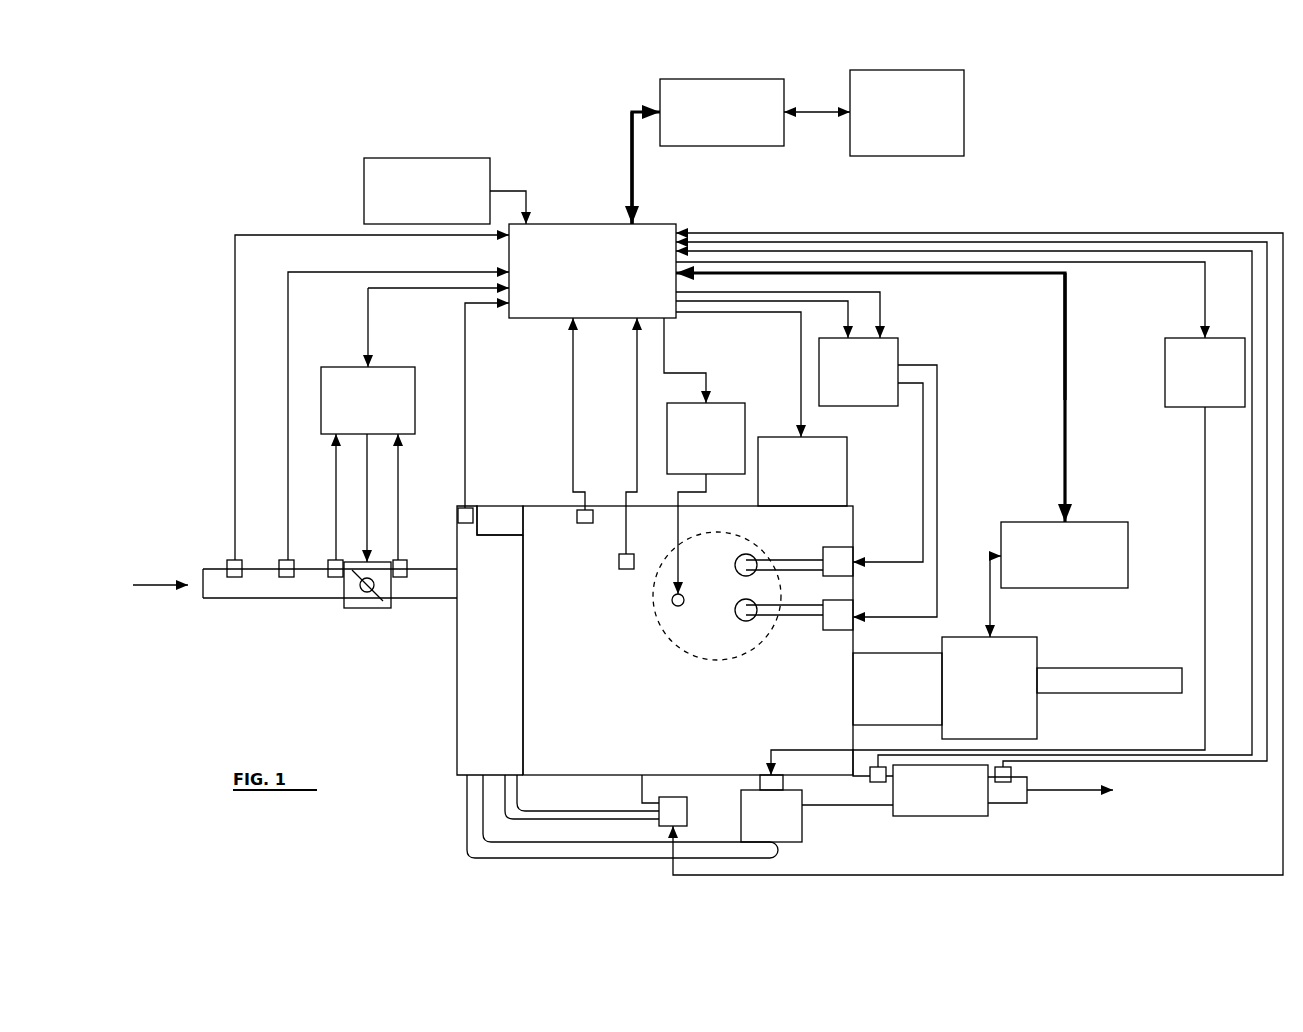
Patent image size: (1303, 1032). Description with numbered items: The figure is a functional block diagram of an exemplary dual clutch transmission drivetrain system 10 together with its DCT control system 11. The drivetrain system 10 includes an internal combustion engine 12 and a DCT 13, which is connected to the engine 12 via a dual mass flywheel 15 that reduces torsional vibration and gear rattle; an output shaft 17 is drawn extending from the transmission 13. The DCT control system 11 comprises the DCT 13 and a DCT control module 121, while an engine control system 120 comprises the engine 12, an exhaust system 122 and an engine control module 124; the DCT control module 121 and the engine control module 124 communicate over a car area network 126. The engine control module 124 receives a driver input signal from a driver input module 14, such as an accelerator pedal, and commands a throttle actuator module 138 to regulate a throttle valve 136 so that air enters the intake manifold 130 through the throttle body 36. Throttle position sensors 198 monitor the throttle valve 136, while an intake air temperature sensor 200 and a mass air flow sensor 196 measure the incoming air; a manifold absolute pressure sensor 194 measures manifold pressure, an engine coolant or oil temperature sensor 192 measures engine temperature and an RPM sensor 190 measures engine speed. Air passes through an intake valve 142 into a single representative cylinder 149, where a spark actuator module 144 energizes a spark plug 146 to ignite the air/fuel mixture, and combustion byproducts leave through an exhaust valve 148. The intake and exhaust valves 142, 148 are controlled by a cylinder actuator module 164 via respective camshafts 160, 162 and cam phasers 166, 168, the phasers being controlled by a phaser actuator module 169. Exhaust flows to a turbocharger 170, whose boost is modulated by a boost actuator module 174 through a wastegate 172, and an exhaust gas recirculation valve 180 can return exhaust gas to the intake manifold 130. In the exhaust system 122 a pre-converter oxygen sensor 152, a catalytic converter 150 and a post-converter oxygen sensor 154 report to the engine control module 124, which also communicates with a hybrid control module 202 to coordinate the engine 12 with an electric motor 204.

The dual clutch transmission drivetrain system 10 is at (182, 128).
The driver input module 14 is at (364, 190).
The engine control module 124 is at (593, 224).
The car area network 126 is at (632, 140).
The hybrid control module 202 is at (724, 146).
The electric motor 204 is at (918, 156).
The engine control system 120 is at (995, 228).
The boost actuator module 174 is at (1165, 338).
The phaser actuator module 169 is at (900, 348).
The spark actuator module 144 is at (730, 403).
The cylinder actuator module 164 is at (847, 460).
The DCT control system 11 is at (1120, 490).
The DCT control module 121 is at (1128, 556).
The dual clutch transmission 13 is at (1040, 637).
The dual mass flywheel 15 is at (935, 653).
The driveshaft 17 is at (1140, 668).
The intake manifold 130 is at (457, 720).
The internal combustion engine 12 is at (853, 512).
The throttle body 36 is at (500, 535).
The manifold absolute pressure sensor 194 is at (458, 508).
The engine coolant or oil temperature sensor 192 is at (578, 523).
The RPM sensor 190 is at (624, 569).
The spark plug 146 is at (673, 603).
The cylinder 149 is at (675, 655).
The intake valve 142 is at (746, 554).
The camshaft 160 is at (800, 560).
The cam phaser 166 is at (838, 547).
The exhaust valve 148 is at (746, 621).
The camshaft 162 is at (797, 615).
The cam phaser 168 is at (840, 630).
The throttle actuator module 138 is at (340, 367).
The throttle valve 136 is at (367, 608).
The intake air temperature sensor 200 is at (227, 565).
The mass air flow sensor 196 is at (285, 577).
The throttle position sensor 198 is at (336, 577).
The exhaust gas recirculation valve 180 is at (670, 797).
The wastegate 172 is at (760, 790).
The turbocharger 170 is at (802, 820).
The exhaust system 122 is at (487, 868).
The pre-converter O2 sensor 152 is at (876, 782).
The catalytic converter 150 is at (940, 816).
The post-converter O2 sensor 154 is at (1003, 782).